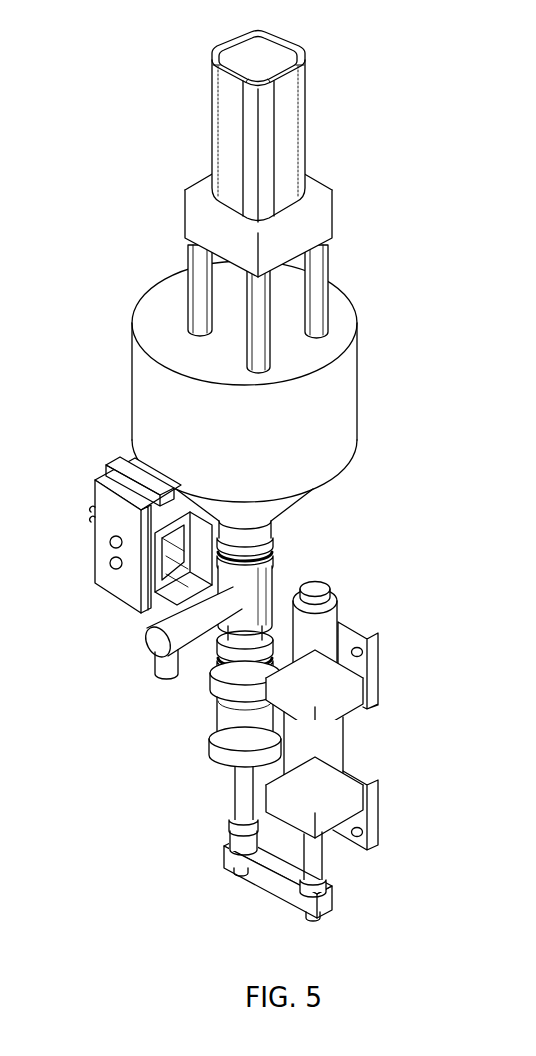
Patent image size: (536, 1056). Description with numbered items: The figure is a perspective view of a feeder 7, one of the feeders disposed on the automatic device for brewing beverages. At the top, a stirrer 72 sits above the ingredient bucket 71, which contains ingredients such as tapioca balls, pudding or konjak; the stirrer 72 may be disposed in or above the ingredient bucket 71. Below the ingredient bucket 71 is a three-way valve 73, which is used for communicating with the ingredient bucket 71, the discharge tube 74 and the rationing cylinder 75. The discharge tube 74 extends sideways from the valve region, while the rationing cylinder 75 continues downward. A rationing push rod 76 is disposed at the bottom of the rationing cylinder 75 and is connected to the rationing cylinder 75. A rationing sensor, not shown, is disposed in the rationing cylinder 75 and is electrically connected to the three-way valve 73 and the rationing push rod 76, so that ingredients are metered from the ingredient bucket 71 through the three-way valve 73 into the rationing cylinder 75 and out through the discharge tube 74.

The feeder 7 is at (145, 58).
The ingredient bucket 71 is at (143, 390).
The stirrer 72 is at (327, 218).
The three-way valve 73 is at (265, 581).
The discharge tube 74 is at (157, 668).
The rationing cylinder 75 is at (250, 732).
The rationing push rod 76 is at (240, 801).